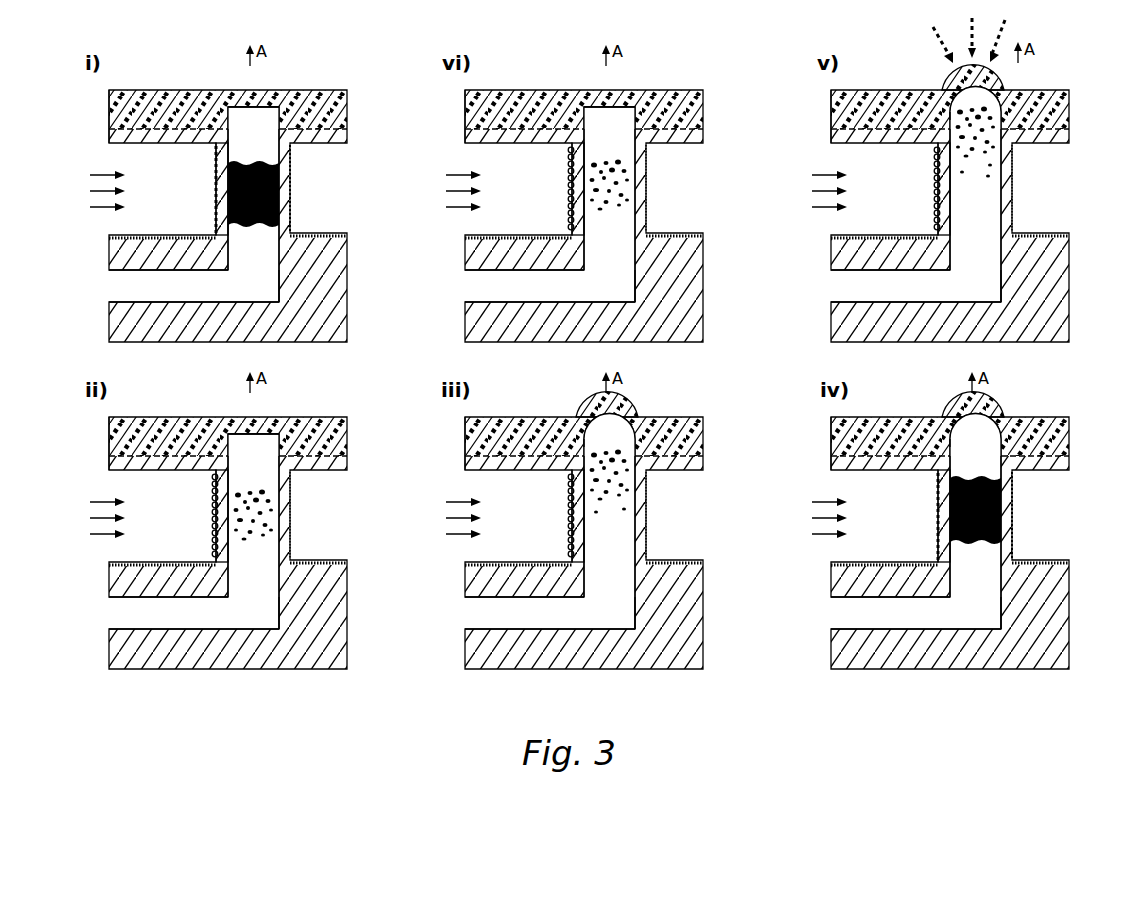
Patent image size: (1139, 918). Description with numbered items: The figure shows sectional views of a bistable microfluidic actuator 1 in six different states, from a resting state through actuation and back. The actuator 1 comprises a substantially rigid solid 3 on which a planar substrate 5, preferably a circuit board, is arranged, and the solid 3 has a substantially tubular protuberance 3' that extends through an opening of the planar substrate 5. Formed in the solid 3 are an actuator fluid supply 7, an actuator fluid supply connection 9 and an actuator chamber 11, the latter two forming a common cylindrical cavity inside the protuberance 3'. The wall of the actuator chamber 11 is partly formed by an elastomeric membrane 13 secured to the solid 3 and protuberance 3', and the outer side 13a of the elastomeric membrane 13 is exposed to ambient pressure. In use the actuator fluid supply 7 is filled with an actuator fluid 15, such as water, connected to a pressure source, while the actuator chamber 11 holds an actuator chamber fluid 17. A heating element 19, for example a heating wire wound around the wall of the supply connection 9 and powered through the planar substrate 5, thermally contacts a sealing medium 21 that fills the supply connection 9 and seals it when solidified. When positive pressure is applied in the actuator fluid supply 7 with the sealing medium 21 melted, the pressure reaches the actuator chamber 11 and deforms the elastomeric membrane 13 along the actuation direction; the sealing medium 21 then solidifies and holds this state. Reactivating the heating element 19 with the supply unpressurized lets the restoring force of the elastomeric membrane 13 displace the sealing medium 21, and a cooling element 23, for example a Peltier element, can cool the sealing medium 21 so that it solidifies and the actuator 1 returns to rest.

The actuator 1 is at (92, 118).
The solid 3 is at (589, 378).
The protuberance 3' is at (601, 352).
The planar substrate 5 is at (340, 239).
The actuator fluid supply 7 is at (126, 299).
The actuator fluid supply connection 9 is at (256, 161).
The actuator chamber 11 is at (262, 132).
The elastomeric membrane 13 is at (344, 120).
The outer side of the elastomeric membrane 13a is at (839, 231).
The actuator fluid 15 is at (257, 277).
The actuator chamber fluid 17 is at (240, 110).
The heating element 19 is at (216, 165).
The sealing medium 21 is at (239, 165).
The cooling element 23 is at (455, 354).